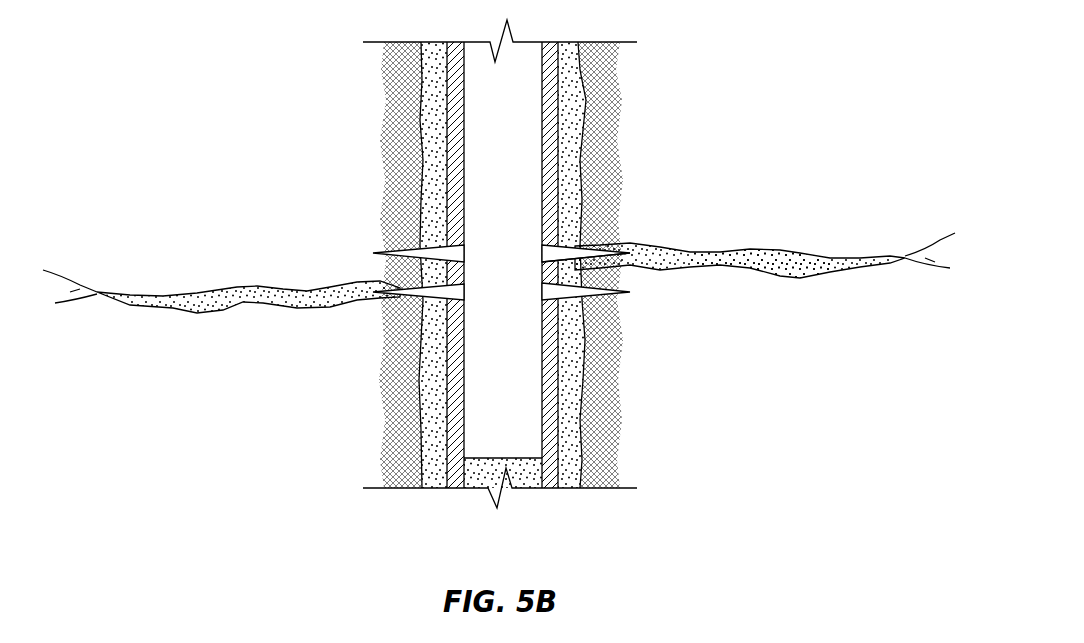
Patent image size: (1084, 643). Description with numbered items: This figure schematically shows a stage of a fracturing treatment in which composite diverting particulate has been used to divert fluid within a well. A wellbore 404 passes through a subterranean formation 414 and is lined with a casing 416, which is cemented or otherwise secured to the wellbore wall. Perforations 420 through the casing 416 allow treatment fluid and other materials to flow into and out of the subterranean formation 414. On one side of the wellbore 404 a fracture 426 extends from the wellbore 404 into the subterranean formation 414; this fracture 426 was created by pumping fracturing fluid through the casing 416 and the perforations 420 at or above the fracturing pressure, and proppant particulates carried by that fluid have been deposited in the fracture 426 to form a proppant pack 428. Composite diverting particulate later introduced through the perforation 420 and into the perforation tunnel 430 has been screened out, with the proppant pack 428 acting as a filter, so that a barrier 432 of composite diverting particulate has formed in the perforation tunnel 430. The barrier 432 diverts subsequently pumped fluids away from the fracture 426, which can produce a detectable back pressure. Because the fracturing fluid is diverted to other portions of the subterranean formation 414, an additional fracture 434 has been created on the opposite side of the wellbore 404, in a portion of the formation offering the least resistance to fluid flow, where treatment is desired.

The wellbore 404 is at (585, 107).
The casing 416 is at (560, 165).
The subterranean formation 414 is at (668, 344).
The perforations 420 is at (553, 242).
The perforation tunnel 430 is at (580, 250).
The barrier 432 is at (630, 291).
The fracture 426 is at (768, 250).
The proppant pack 428 is at (818, 268).
The additional fracture 434 is at (237, 290).